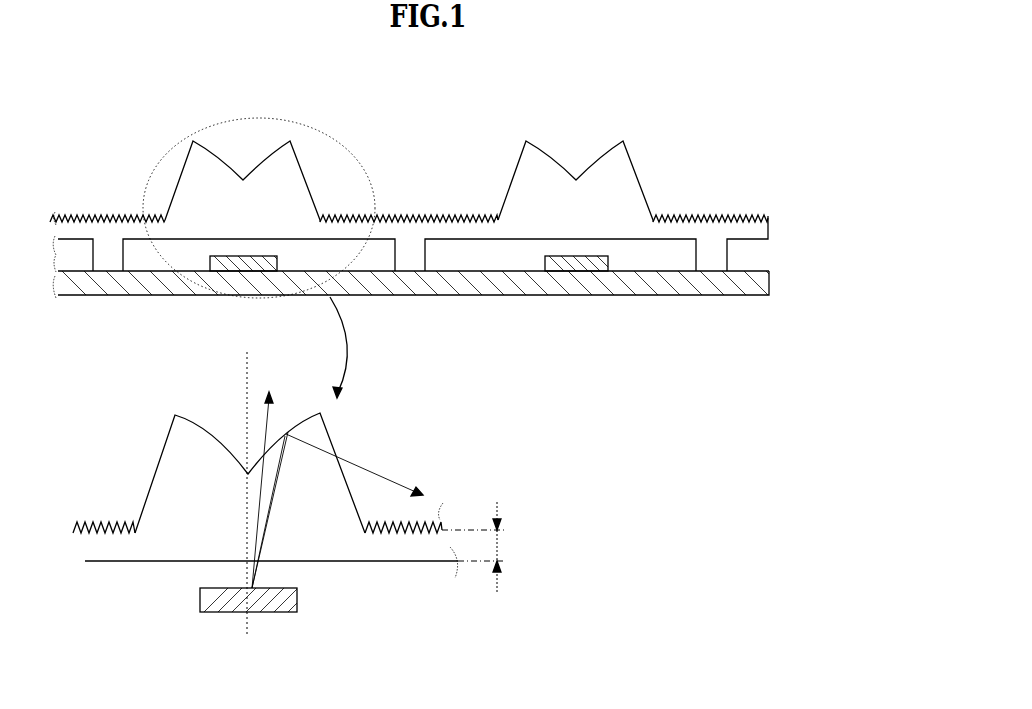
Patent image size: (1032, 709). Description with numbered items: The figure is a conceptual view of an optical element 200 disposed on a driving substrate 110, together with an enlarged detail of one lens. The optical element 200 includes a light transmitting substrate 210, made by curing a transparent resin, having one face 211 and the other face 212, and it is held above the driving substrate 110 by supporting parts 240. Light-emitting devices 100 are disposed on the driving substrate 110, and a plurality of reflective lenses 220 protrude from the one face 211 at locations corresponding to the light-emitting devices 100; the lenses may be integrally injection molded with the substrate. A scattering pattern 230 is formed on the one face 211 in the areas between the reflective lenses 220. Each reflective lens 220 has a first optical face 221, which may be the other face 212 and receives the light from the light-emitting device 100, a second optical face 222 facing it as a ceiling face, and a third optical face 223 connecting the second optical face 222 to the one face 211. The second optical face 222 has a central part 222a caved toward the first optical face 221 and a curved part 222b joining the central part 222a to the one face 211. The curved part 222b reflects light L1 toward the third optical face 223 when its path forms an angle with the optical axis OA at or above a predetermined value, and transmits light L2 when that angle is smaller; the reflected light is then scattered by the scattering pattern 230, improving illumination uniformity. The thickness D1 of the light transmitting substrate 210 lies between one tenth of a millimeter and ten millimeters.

The light-emitting device 100 is at (573, 273).
The driving substrate 110 is at (470, 275).
The optical element 200 is at (472, 378).
The light transmitting substrate 210 is at (456, 413).
The one face 211 is at (770, 213).
The other face 212 is at (772, 238).
The reflective lens 220 is at (637, 169).
The first optical face 221 is at (287, 568).
The second optical face 222 is at (191, 389).
The central part 222a is at (247, 445).
The curved part 222b is at (193, 417).
The third optical face 223 is at (327, 430).
The scattering pattern 230 is at (725, 213).
The supporting part 240 is at (715, 248).
The optical axis OA is at (246, 484).
The light L1 is at (361, 465).
The light L2 is at (263, 478).
The thickness D1 is at (508, 547).